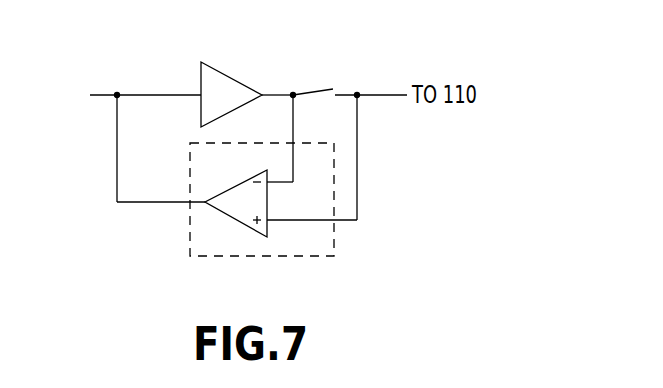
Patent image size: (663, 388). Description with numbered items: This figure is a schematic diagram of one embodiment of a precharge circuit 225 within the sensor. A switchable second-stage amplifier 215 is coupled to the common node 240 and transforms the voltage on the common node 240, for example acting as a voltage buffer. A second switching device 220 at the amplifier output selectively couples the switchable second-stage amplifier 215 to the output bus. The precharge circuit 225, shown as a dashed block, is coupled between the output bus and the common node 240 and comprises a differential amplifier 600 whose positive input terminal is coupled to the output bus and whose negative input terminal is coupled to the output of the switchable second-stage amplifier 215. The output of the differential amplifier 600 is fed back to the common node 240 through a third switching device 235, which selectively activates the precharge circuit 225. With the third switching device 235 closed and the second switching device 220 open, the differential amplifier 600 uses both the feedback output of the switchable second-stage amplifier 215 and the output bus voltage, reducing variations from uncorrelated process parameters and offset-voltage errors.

The common node 240 is at (117, 95).
The switchable second-stage amplifier 215 is at (233, 78).
The second switching device 220 is at (322, 91).
The third switching device 235 is at (172, 193).
The differential amplifier 600 is at (237, 182).
The precharge circuit 225 is at (308, 257).